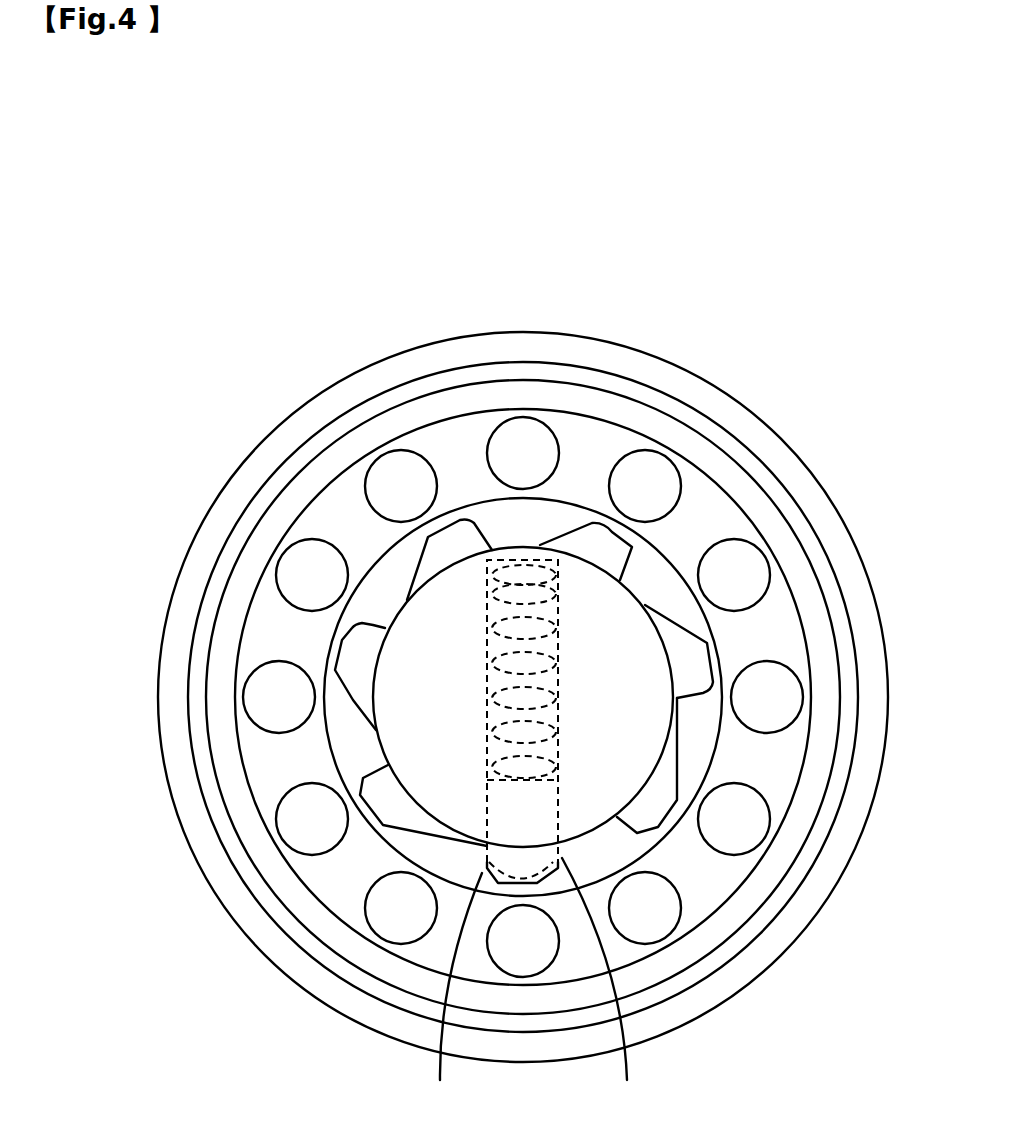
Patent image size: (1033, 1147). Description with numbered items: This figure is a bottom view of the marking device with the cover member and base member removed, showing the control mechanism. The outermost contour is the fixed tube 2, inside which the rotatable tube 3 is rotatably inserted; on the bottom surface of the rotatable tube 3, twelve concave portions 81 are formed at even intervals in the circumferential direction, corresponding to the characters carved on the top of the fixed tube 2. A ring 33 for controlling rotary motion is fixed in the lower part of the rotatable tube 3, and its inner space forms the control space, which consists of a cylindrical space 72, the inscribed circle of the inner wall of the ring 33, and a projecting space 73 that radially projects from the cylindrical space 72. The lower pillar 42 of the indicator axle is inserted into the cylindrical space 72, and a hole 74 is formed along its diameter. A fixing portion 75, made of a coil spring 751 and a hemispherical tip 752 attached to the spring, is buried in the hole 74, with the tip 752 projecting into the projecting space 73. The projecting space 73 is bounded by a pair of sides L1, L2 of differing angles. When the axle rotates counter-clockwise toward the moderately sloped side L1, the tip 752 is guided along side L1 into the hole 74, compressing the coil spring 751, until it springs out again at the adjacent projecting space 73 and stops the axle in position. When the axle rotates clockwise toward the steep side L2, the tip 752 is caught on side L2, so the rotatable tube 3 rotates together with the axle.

The fixed tube 2 is at (870, 768).
The rotatable tube 3 is at (788, 605).
The concave portion 81 is at (645, 462).
The ring 33 is at (652, 562).
The fixing portion 75 is at (427, 737).
The lower pillar 42 is at (635, 737).
The hole 74 is at (490, 597).
The coil spring 751 is at (503, 657).
The tip 752 is at (510, 827).
The cylindrical space 72 is at (468, 843).
The projecting space 73 is at (657, 810).
The side L2 is at (452, 999).
The side L1 is at (605, 991).